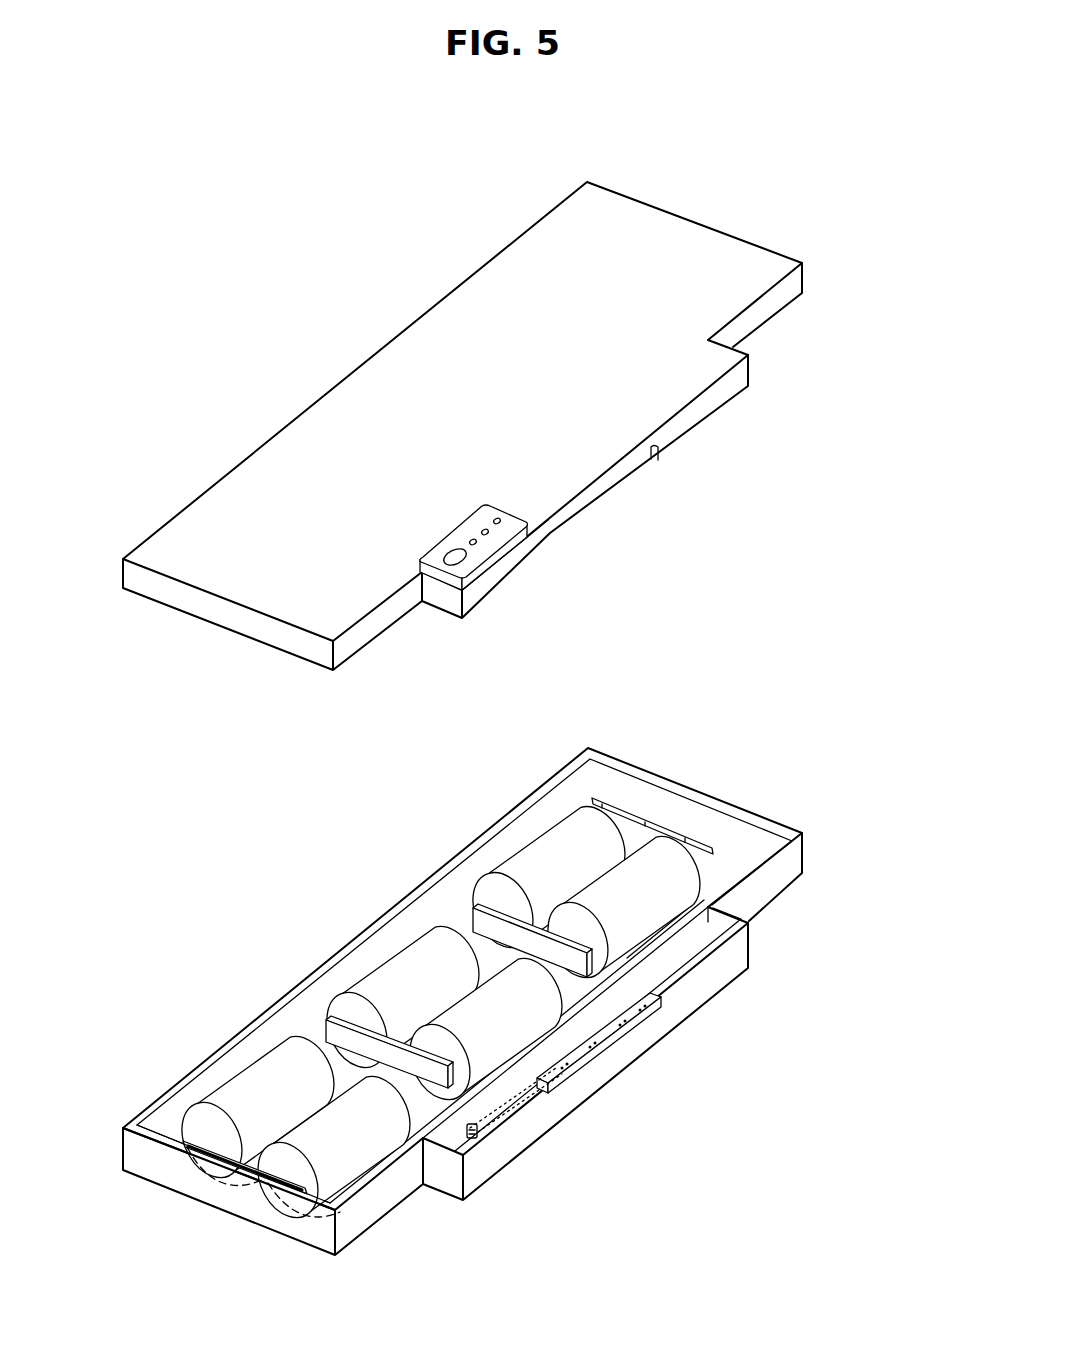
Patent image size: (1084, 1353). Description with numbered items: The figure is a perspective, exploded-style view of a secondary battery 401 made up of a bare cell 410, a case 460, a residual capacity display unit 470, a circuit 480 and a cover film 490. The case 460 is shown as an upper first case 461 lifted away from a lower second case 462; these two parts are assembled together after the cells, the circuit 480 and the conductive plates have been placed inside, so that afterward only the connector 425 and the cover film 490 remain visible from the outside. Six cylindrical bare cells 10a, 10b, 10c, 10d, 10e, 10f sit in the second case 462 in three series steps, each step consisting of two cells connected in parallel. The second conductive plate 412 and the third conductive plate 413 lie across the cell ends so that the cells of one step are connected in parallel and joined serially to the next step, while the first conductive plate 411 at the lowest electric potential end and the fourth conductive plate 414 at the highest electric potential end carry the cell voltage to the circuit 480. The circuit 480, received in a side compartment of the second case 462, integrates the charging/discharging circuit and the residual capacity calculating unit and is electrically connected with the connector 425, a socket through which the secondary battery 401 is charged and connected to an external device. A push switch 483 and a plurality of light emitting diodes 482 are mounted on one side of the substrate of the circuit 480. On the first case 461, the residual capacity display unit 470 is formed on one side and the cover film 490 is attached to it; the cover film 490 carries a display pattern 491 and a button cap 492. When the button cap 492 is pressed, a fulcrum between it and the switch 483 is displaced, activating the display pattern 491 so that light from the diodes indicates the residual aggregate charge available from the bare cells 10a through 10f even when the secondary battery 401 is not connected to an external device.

The secondary battery 401 is at (923, 138).
The case 460 is at (885, 455).
The first case 461 is at (684, 391).
The second case 462 is at (700, 772).
The residual capacity display unit 470 is at (548, 528).
The cover film 490 is at (487, 607).
The display pattern 491 is at (478, 542).
The button cap 492 is at (465, 565).
The bare cell 410 is at (376, 982).
The first conductive plate 411 is at (187, 1152).
The second conductive plate 412 is at (326, 1021).
The third conductive plate 413 is at (473, 908).
The fourth conductive plate 414 is at (589, 782).
The circuit 480 is at (618, 1073).
The connector 425 is at (630, 1037).
The light emitting diodes 482 is at (503, 1093).
The push switch 483 is at (475, 1133).
The bare cell 10a is at (258, 1106).
The bare cell 10b is at (334, 1146).
The bare cell 10c is at (403, 996).
The bare cell 10d is at (486, 1028).
The bare cell 10e is at (549, 876).
The bare cell 10f is at (624, 906).